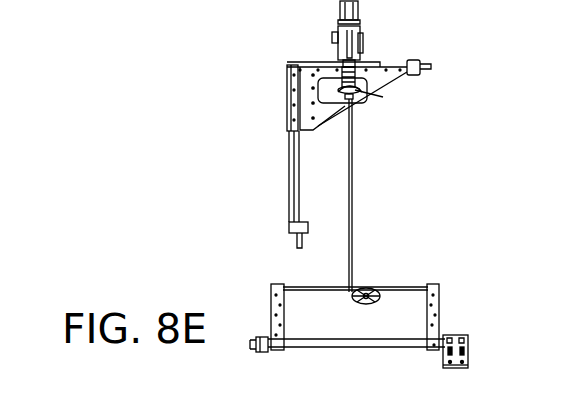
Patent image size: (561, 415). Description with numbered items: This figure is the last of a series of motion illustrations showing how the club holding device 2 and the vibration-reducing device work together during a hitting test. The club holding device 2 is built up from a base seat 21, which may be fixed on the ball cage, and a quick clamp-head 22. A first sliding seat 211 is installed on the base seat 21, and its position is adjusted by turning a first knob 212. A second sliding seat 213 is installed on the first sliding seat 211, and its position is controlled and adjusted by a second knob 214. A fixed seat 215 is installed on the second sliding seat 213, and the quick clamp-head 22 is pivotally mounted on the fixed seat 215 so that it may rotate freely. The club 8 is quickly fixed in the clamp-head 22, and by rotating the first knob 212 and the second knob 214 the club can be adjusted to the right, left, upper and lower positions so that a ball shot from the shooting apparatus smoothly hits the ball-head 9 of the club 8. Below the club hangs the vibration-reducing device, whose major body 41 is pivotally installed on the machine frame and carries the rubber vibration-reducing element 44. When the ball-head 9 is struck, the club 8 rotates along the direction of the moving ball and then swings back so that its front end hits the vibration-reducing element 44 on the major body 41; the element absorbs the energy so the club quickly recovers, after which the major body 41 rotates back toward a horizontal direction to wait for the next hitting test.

The club holding device 2 is at (283, 92).
The first sliding seat 211 is at (290, 105).
The base seat 21 is at (290, 158).
The first knob 212 is at (290, 233).
The second sliding seat 213 is at (377, 63).
The second knob 214 is at (423, 75).
The fixed seat 215 is at (357, 35).
The quick clamp-head 22 is at (362, 96).
The club 8 is at (351, 178).
The ball-head 9 is at (352, 303).
The vibration-reducing element 44 is at (404, 284).
The major body 41 is at (439, 300).